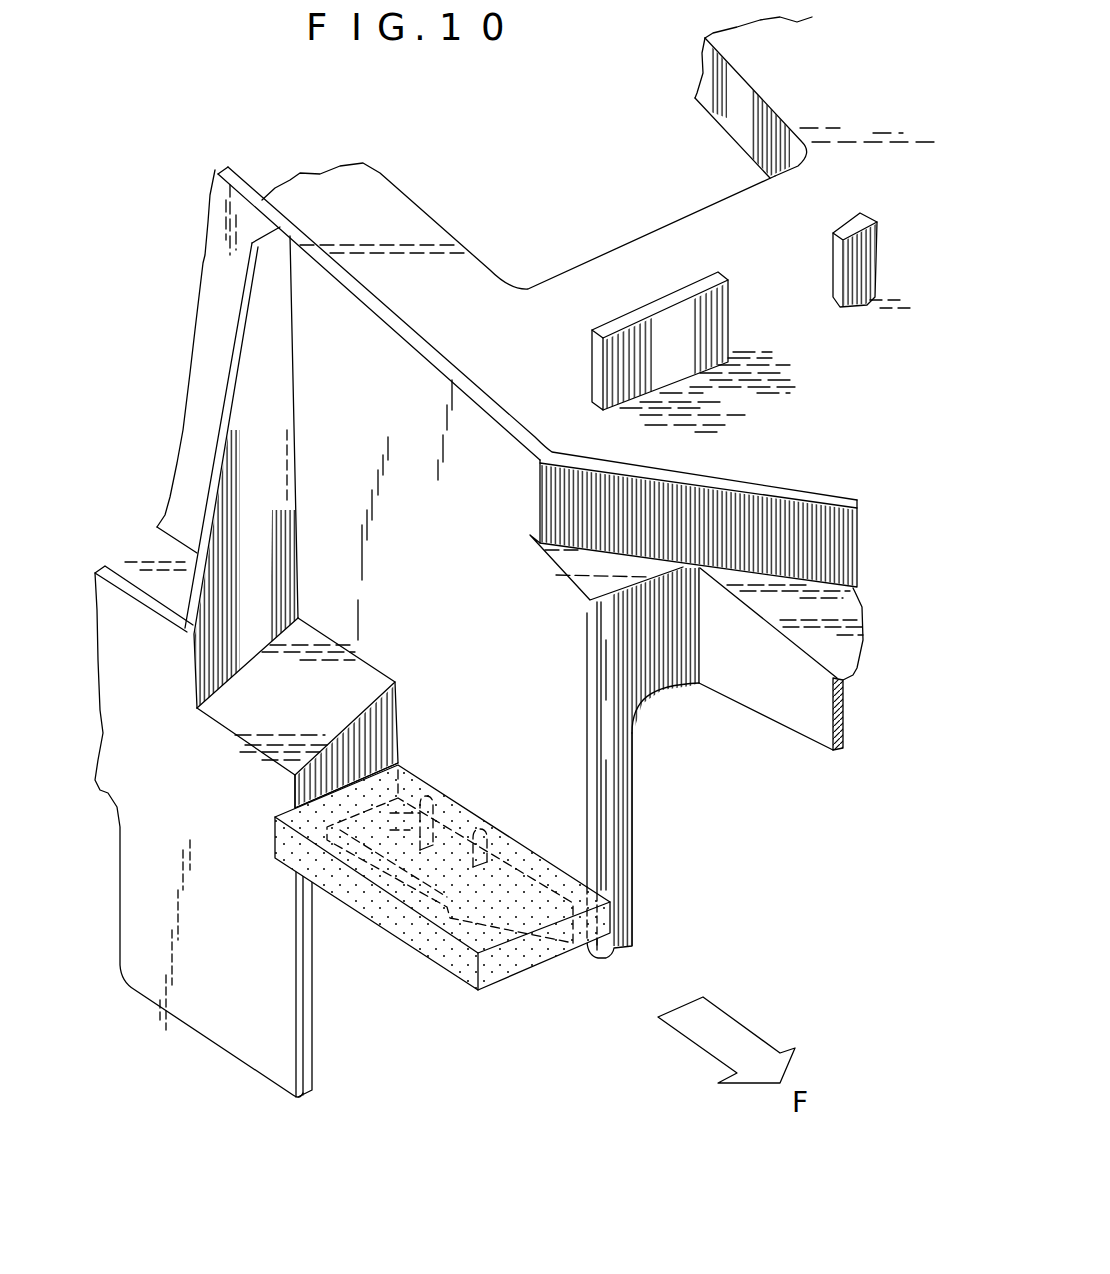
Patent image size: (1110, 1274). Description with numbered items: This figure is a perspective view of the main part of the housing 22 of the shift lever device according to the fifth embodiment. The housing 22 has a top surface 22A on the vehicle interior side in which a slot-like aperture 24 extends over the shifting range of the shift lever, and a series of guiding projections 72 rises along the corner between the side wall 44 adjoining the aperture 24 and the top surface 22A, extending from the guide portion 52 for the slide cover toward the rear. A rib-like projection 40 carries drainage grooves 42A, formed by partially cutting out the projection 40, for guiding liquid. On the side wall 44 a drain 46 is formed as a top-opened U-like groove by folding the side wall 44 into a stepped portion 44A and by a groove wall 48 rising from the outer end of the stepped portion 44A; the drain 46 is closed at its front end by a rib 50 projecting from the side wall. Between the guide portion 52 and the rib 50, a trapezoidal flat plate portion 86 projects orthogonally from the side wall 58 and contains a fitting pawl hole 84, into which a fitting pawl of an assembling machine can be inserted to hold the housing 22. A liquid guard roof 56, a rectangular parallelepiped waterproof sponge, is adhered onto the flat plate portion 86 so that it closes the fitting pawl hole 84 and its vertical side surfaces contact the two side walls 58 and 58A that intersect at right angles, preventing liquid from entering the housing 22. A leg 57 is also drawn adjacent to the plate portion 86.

The housing 22 is at (747, 699).
The top surface 22A is at (802, 83).
The aperture 24 is at (493, 267).
The projection 40 is at (858, 307).
The drainage groove 42A is at (735, 303).
The side wall 44 is at (198, 335).
The stepped portion 44A is at (156, 547).
The drain 46 is at (184, 755).
The groove wall 48 is at (148, 630).
The rib 50 is at (273, 547).
The guide portion 52 is at (843, 652).
The liquid guard roof 56 is at (442, 902).
The leg 57 is at (587, 948).
The side wall 58 is at (440, 717).
The side wall 58A is at (327, 770).
The guiding projection 72 is at (248, 225).
The fitting pawl hole 84 is at (447, 863).
The flat plate portion 86 is at (447, 853).